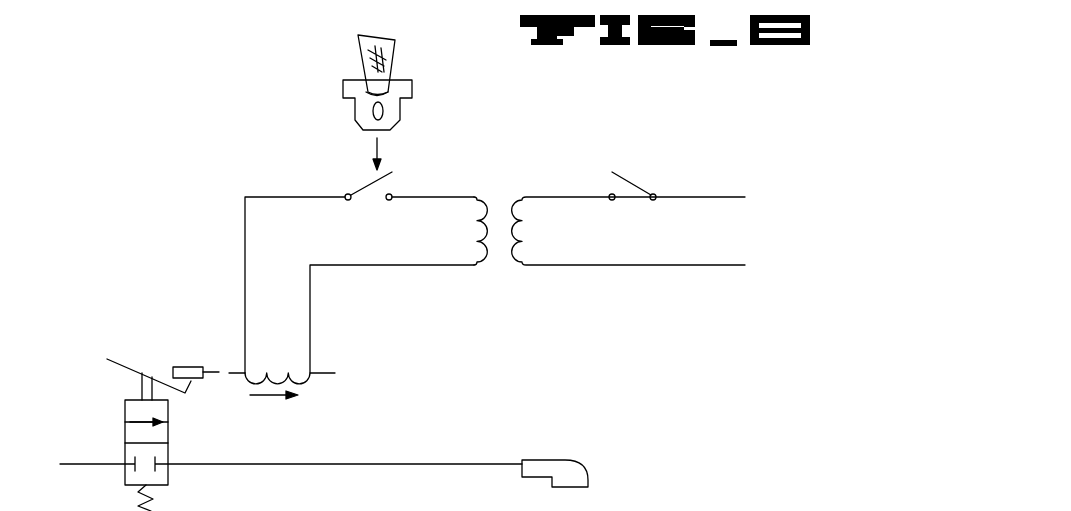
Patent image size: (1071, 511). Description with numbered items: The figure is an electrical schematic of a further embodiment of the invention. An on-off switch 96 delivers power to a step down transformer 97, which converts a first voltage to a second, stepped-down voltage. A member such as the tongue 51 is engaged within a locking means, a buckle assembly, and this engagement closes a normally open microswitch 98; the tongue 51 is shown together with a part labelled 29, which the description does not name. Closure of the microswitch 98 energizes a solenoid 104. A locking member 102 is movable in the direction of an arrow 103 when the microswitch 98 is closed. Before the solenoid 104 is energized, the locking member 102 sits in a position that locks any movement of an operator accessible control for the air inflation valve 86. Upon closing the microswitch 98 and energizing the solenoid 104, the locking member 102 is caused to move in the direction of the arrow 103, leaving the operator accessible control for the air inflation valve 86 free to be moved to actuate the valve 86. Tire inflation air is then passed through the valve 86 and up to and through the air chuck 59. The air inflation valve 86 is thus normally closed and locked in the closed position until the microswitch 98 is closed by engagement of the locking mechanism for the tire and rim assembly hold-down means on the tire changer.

The container 29 is at (357, 53).
The tongue 51 is at (352, 108).
The microswitch 98 is at (377, 184).
The step down transformer 97 is at (485, 199).
The on-off switch 96 is at (631, 179).
The locking member 102 is at (190, 367).
The solenoid 104 is at (317, 366).
The arrow 103 is at (267, 397).
The air inflation valve 86 is at (125, 478).
The air chuck 59 is at (553, 461).